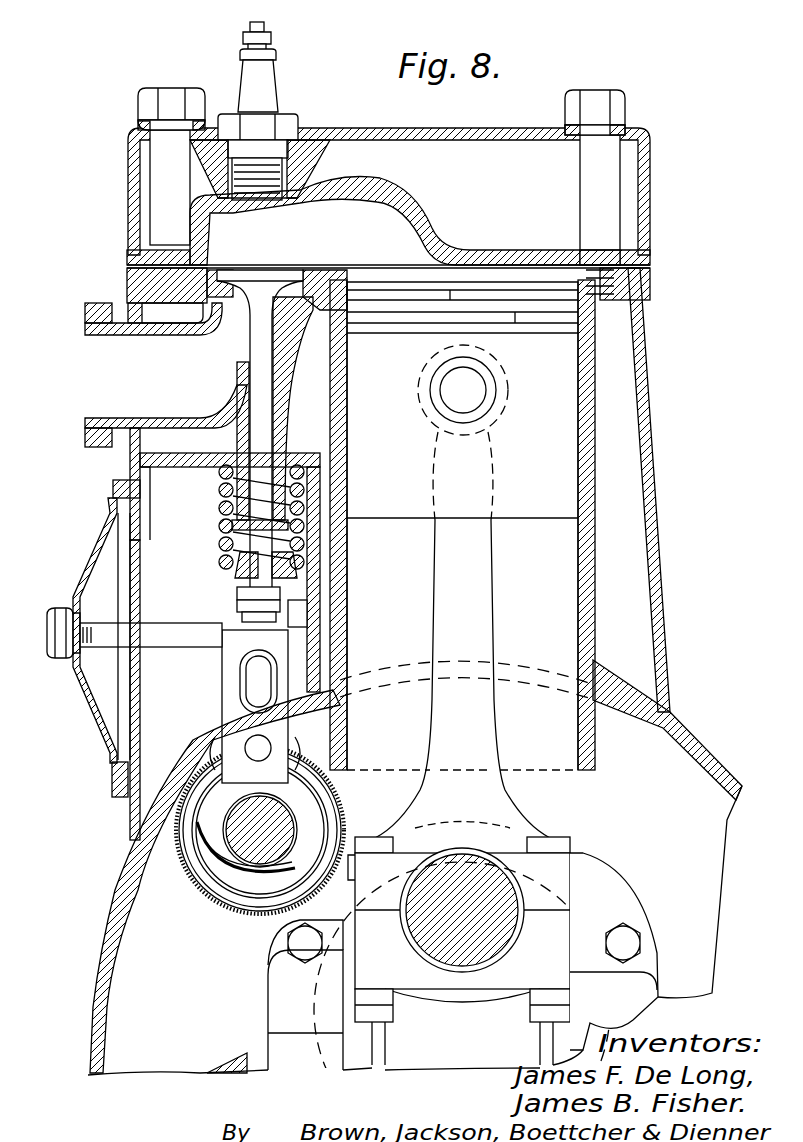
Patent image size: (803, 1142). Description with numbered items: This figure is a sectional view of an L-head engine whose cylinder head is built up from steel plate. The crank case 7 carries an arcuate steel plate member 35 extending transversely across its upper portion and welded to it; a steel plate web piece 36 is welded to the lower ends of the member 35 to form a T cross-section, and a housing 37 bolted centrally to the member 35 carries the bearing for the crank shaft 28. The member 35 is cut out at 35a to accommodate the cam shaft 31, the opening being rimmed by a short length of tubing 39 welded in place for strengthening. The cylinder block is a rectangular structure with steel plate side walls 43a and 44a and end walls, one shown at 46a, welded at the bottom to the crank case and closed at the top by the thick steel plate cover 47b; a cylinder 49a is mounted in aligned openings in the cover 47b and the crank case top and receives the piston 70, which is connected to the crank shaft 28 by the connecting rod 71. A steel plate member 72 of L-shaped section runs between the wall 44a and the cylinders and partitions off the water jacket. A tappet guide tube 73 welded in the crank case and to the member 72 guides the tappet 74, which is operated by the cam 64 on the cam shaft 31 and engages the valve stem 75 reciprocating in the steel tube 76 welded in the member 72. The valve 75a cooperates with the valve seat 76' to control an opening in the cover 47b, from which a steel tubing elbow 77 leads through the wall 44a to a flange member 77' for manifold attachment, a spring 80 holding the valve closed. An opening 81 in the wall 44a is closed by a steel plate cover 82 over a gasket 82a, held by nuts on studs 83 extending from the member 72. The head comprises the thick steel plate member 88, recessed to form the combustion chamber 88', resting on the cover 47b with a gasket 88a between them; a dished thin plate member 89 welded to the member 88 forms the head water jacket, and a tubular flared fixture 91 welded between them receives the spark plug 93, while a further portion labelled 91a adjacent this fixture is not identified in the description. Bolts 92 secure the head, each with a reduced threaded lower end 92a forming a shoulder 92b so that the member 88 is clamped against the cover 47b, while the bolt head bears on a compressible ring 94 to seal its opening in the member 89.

The crank case 7 is at (700, 768).
The crank shaft 28 is at (452, 965).
The cam shaft 31 is at (245, 855).
The member 35 is at (165, 1058).
The cut out 35a is at (343, 800).
The web piece 36 is at (230, 1062).
The housing 37 is at (272, 1000).
The tubing 39 is at (262, 905).
The side wall 43a is at (660, 512).
The side wall 44a is at (130, 470).
The end wall 46a is at (630, 568).
The cover 47b is at (140, 290).
The cylinder 49a is at (590, 450).
The cam 64 is at (200, 845).
The piston 70 is at (572, 395).
The connecting rod 71 is at (492, 596).
The member 72 is at (185, 466).
The tappet guide tube 73 is at (222, 680).
The tappet 74 is at (232, 640).
The valve stem 75 is at (248, 350).
The valve 75a is at (262, 270).
The tube 76 is at (248, 413).
The valve seat 76' is at (328, 250).
The elbow 77 is at (144, 365).
The flange member 77' is at (73, 368).
The spring 80 is at (218, 525).
The opening 81 is at (130, 738).
The cover 82 is at (90, 540).
The gasket 82a is at (118, 800).
The studs 83 is at (160, 623).
The member 88 is at (388, 221).
The combustion chamber 88' is at (383, 239).
The gasket 88a is at (650, 266).
The dished member 89 is at (640, 165).
The tubular flared fixture 91 is at (312, 162).
The boss seat 91a is at (290, 190).
The bolt 92 is at (175, 100).
The threaded lower end portion 92a is at (618, 240).
The shoulder 92b is at (600, 255).
The spark plug 93 is at (272, 88).
The compressible ring 94 is at (140, 125).